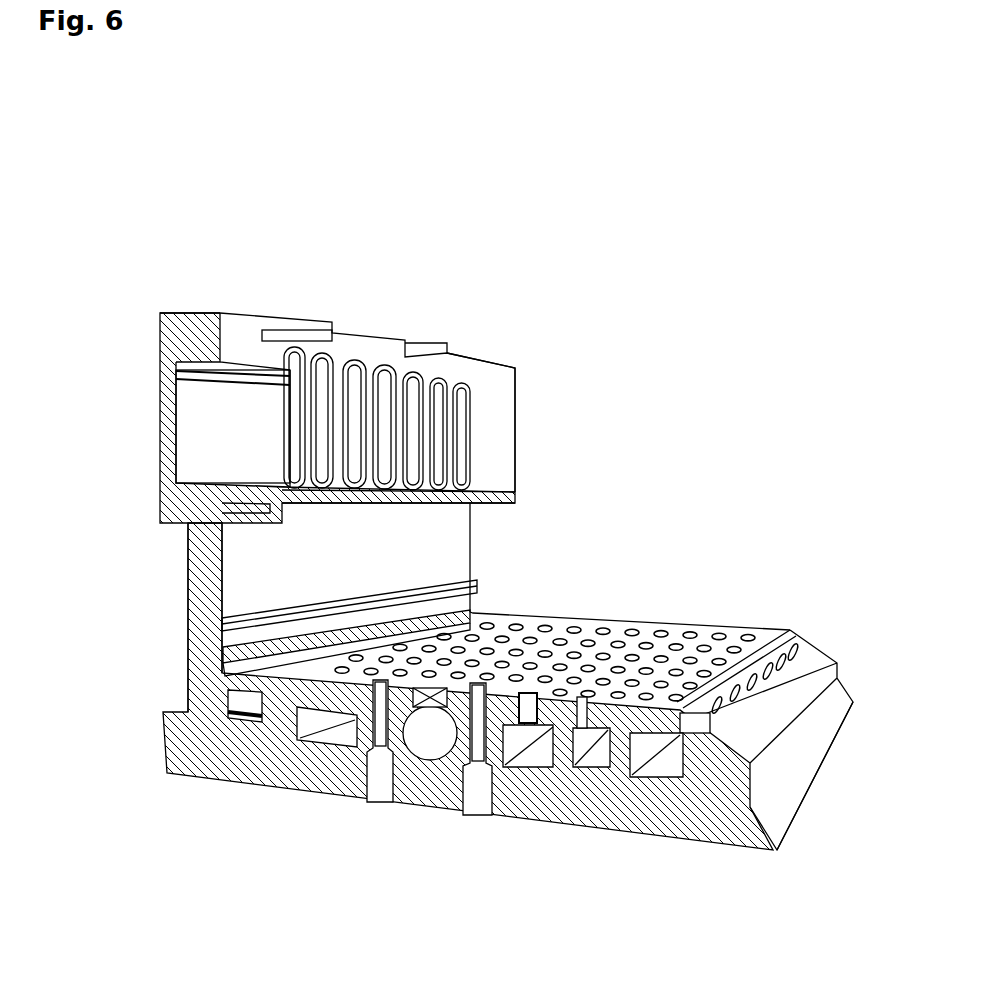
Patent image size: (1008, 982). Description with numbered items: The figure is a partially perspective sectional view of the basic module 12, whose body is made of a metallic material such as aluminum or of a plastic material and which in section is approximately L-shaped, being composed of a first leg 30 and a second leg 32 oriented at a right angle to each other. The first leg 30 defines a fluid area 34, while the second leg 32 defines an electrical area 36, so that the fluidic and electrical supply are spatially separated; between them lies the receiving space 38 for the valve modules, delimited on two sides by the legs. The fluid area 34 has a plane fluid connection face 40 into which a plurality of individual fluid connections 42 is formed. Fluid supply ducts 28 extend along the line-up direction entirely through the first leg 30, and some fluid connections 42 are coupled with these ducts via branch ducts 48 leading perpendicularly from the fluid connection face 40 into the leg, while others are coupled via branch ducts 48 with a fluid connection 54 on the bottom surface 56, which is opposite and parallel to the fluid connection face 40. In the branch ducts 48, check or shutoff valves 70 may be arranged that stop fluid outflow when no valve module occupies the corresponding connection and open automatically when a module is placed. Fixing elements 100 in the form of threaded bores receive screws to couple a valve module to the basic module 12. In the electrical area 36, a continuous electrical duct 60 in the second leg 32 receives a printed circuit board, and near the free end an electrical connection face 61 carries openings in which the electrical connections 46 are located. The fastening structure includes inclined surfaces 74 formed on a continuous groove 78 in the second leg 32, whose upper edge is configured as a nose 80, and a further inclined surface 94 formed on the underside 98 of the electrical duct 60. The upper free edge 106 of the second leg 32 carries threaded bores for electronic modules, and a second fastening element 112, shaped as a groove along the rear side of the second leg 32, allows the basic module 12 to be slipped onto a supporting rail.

The basic module 12 is at (118, 168).
The upper free edge 106 is at (203, 313).
The electrical connection 46 is at (353, 373).
The electrical connection face 61 is at (487, 378).
The electrical area 36 is at (508, 393).
The receiving space 38 is at (596, 410).
The electrical duct 60 is at (200, 432).
The second leg 32 is at (146, 505).
The underside of the electrical duct 98 is at (513, 494).
The inclined surface 94 is at (268, 500).
The second fastening element 112 is at (188, 598).
The inclined surface 74 is at (240, 650).
The groove 78 is at (240, 668).
The nose 80 is at (480, 587).
The fluid area 34 is at (692, 593).
The fluid connection face 40 is at (710, 630).
The fixing element 100 is at (808, 640).
The fluid connection 42 is at (648, 672).
The branch duct 48 is at (380, 717).
The fluid connection 54 is at (383, 795).
The check or shutoff valve 70 is at (437, 703).
The fluid supply duct 28 is at (647, 798).
The bottom surface 56 is at (683, 847).
The first leg 30 is at (750, 838).